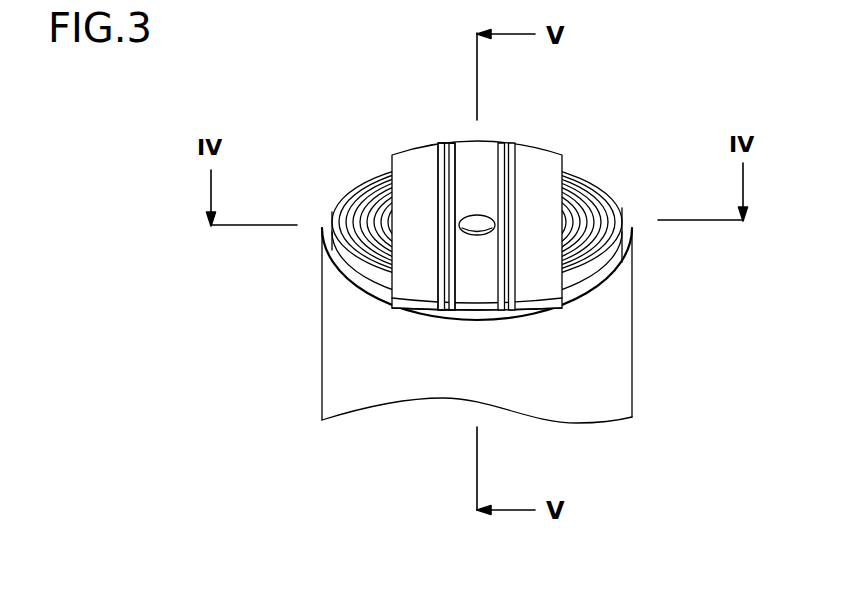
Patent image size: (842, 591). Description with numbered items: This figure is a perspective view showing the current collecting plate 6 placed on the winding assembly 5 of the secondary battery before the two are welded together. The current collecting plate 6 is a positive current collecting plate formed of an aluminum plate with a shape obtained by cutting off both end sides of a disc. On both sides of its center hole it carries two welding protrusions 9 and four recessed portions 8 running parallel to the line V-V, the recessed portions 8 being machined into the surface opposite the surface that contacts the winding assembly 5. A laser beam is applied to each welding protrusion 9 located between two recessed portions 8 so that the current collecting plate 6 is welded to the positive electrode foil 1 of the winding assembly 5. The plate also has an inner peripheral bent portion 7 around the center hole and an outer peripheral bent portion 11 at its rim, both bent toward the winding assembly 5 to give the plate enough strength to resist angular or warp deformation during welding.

The positive electrode foil 1 is at (333, 212).
The winding assembly 5 is at (292, 365).
The current collecting plate 6 is at (542, 167).
The inner peripheral bent portion 7 is at (483, 220).
The recessed portions 8 is at (453, 147).
The welding protrusions 9 is at (438, 150).
The outer peripheral bent portion 11 is at (537, 307).